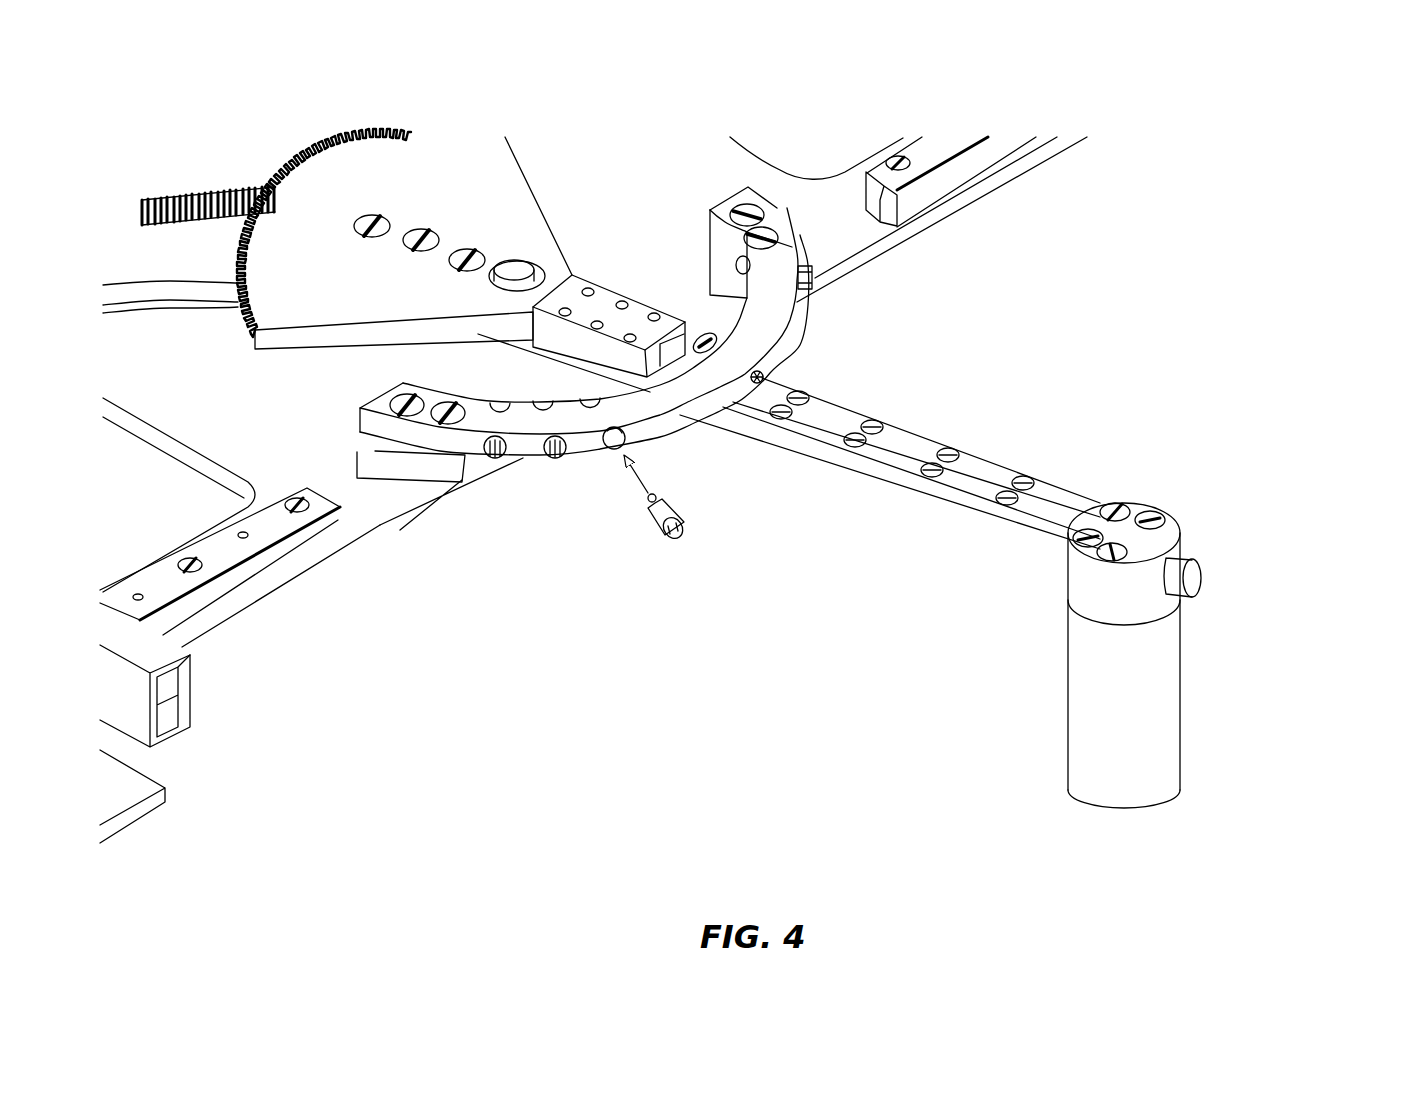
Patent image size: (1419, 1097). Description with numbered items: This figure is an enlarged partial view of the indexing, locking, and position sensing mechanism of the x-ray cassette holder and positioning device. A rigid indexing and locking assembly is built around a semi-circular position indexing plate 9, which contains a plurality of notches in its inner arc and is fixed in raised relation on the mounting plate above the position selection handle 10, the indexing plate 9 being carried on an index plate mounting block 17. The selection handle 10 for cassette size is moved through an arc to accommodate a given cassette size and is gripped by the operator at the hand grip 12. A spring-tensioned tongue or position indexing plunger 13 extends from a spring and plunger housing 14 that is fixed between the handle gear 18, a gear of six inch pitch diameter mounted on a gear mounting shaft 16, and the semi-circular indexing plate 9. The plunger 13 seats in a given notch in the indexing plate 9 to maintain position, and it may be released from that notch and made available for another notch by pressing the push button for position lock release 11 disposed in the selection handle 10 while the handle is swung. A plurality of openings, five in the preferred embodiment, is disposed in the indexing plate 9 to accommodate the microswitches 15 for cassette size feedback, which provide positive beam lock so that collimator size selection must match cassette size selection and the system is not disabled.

The position indexing plate 9 is at (793, 325).
The position selection handle 10 is at (1062, 486).
The push button for position lock release 11 is at (1208, 578).
The hand grip for selection handle 12 is at (1186, 655).
The position indexing plunger 13 is at (707, 347).
The spring and plunger housing 14 is at (614, 346).
The microswitch for cassette size feedback 15 is at (672, 548).
The gear mounting shaft 16 is at (518, 292).
The index plate mounting block 17 is at (391, 456).
The handle gear 18 is at (318, 335).